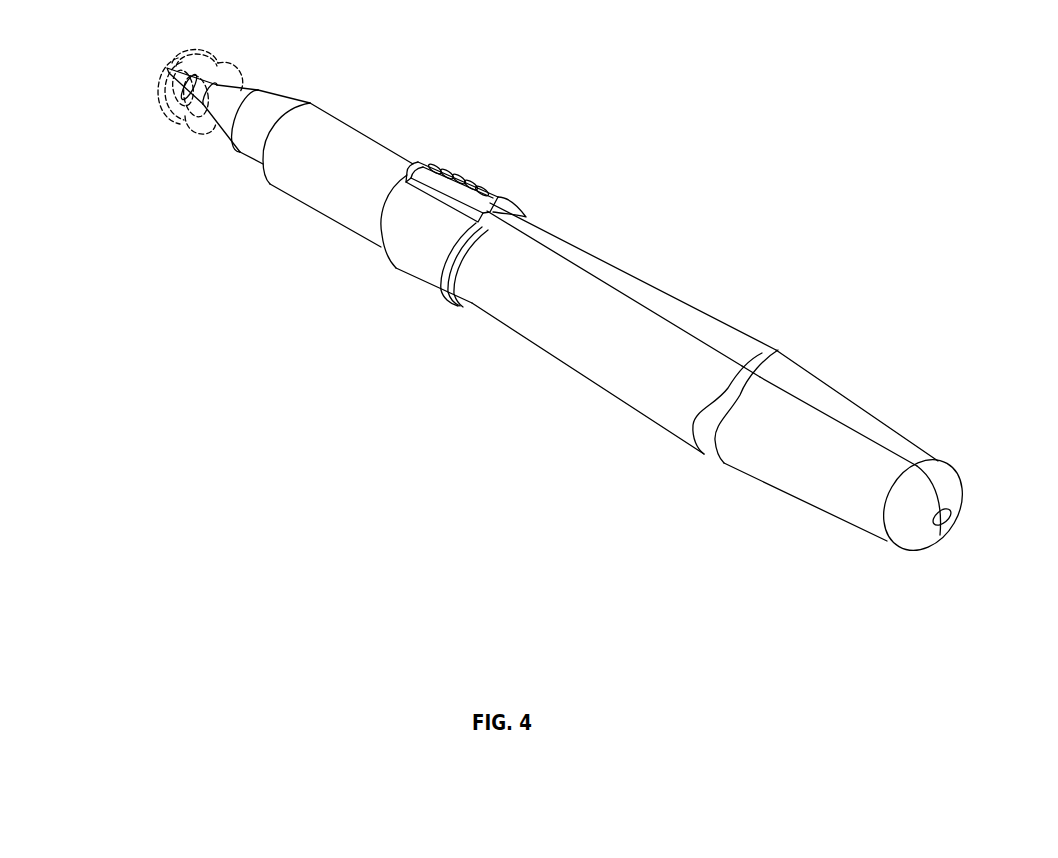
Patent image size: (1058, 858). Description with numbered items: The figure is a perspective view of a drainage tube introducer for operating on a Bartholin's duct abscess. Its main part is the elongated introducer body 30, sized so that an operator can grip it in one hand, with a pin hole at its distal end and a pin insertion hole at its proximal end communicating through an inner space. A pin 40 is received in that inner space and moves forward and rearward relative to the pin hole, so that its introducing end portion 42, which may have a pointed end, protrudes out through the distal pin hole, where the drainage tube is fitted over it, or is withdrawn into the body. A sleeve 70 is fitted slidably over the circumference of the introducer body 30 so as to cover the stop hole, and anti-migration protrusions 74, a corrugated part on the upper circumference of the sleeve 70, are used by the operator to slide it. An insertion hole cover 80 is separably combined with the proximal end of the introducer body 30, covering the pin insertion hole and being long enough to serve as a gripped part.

The introducer body 30 is at (590, 360).
The pin 40 is at (176, 142).
The introducing end portion 42 is at (167, 68).
The sleeve 70 is at (410, 284).
The anti-migration protrusions 74 is at (478, 171).
The insertion hole cover 80 is at (820, 496).